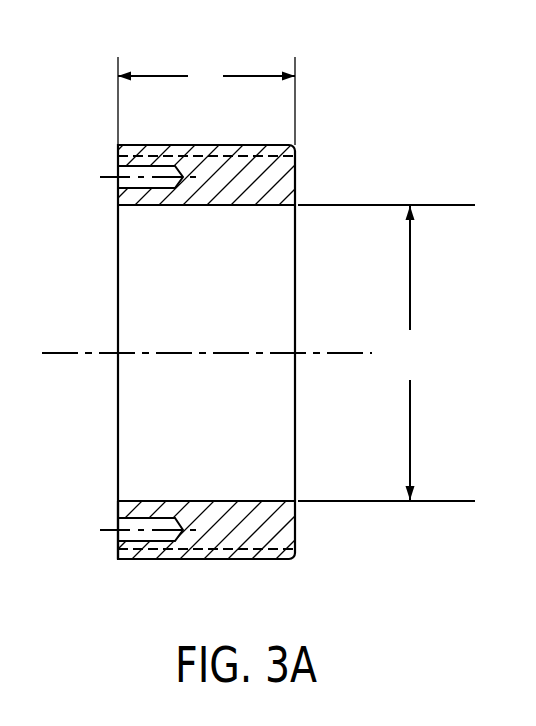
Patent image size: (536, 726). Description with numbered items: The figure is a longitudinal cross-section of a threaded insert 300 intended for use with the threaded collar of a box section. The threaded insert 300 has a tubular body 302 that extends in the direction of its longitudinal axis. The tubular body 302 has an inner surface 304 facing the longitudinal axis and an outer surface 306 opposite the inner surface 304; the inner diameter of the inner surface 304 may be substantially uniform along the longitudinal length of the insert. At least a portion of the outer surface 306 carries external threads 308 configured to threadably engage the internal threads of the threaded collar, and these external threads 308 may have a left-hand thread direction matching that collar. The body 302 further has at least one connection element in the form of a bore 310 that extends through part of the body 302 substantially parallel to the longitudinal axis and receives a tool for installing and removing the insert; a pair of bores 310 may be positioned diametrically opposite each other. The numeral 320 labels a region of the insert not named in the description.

The threaded insert 300 is at (384, 58).
The tubular body 302 is at (118, 146).
The inner surface 304 is at (191, 205).
The outer surface 306 is at (170, 157).
The external threads 308 is at (234, 145).
The bore 310 is at (127, 188).
The end face 320 is at (118, 511).